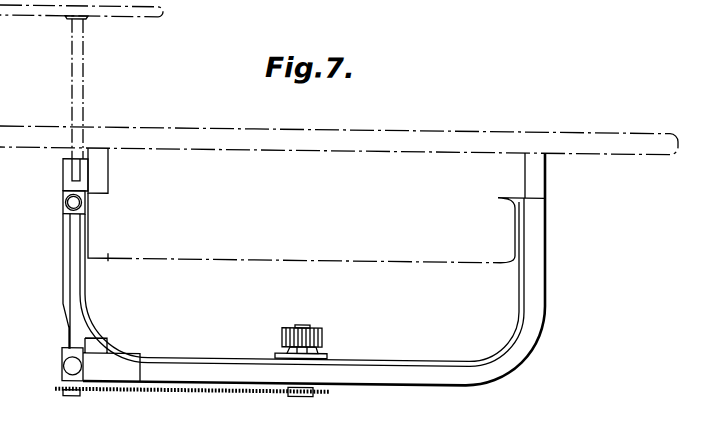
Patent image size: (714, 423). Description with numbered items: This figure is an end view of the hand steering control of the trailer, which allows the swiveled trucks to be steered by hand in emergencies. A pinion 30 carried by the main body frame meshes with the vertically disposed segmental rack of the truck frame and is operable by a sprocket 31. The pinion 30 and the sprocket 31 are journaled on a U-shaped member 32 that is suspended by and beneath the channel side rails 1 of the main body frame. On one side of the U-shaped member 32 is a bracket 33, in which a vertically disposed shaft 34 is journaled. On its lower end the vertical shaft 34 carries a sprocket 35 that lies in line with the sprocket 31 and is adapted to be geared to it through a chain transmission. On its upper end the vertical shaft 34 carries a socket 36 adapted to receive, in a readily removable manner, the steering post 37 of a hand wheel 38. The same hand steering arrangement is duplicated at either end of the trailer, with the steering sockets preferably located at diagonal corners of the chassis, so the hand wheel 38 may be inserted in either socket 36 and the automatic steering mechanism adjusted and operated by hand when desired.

The channel side rails 1 is at (100, 260).
The pinion 30 is at (322, 328).
The sprocket 31 is at (325, 389).
The U-shaped member 32 is at (500, 362).
The bracket 33 is at (62, 357).
The vertically disposed shaft 34 is at (70, 323).
The sprocket 35 is at (77, 396).
The socket 36 is at (65, 168).
The steering post 37 is at (72, 98).
The hand wheel 38 is at (43, 13).